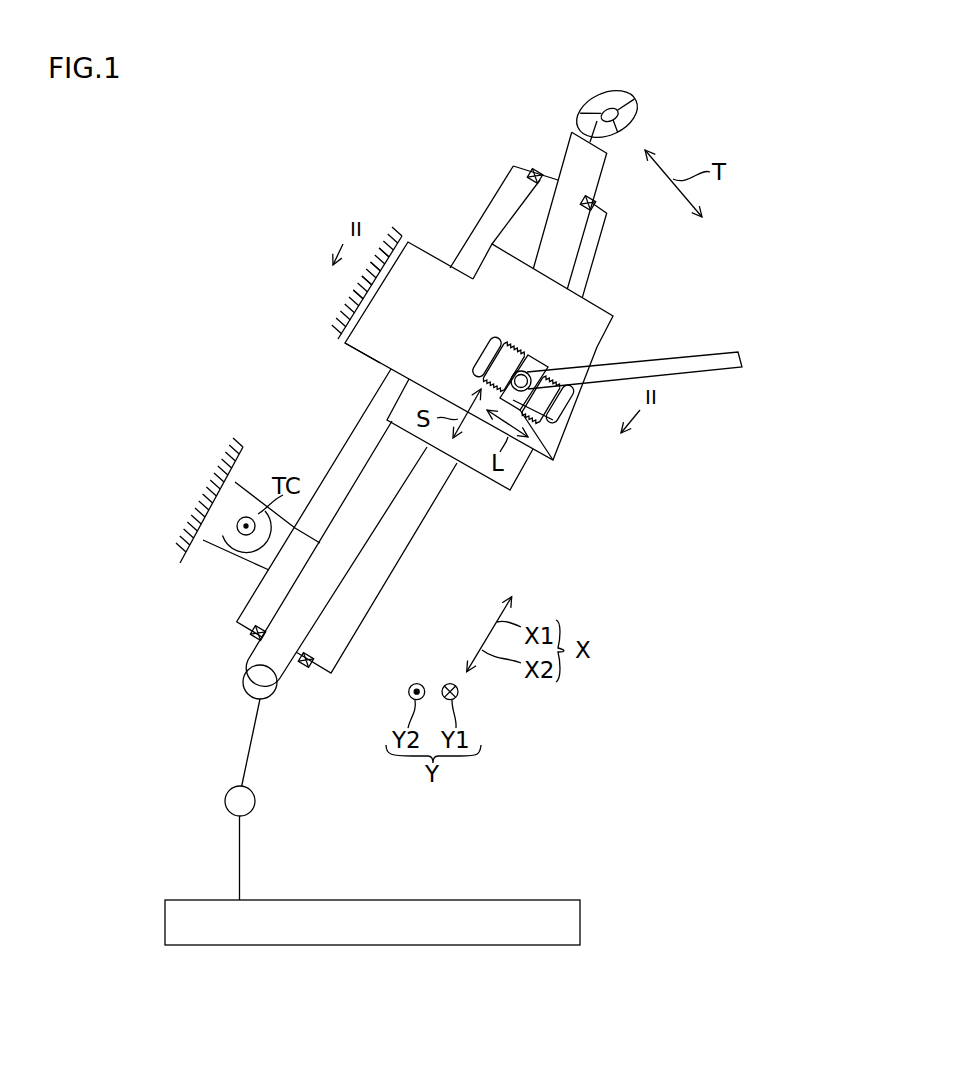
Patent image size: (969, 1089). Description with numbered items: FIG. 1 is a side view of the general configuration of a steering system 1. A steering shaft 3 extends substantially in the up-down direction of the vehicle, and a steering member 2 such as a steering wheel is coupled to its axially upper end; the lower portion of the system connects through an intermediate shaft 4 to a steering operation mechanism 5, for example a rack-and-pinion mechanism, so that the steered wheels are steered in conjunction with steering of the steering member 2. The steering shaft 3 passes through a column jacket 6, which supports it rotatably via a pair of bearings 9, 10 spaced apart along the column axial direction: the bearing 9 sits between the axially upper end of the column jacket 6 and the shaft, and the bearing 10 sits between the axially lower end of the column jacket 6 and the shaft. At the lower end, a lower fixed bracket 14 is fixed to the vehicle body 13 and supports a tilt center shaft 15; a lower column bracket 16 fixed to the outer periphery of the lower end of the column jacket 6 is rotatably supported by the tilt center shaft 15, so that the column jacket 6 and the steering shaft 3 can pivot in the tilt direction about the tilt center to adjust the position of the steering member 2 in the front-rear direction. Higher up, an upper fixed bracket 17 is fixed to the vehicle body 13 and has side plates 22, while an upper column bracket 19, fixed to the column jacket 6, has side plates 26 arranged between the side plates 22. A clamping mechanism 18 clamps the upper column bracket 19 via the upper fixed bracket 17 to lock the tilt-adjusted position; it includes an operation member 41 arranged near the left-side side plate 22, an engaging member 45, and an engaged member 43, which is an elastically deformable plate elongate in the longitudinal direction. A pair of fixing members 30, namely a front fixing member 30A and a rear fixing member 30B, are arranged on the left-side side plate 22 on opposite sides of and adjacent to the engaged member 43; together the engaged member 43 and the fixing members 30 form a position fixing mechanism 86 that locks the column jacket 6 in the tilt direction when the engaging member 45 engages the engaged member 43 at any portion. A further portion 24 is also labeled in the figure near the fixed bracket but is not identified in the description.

The steering system 1 is at (664, 101).
The steering member 2 is at (577, 100).
The steering shaft 3 is at (557, 152).
The intermediate shaft 4 is at (250, 742).
The steering operation mechanism 5 is at (165, 922).
The column jacket 6 is at (497, 182).
The bearing 9 is at (590, 201).
The bearing 10 is at (307, 665).
The vehicle body 13 is at (331, 326).
The lower fixed bracket 14 is at (217, 535).
The tilt center shaft 15 is at (246, 516).
The lower column bracket 16 is at (260, 568).
The upper fixed bracket 17 is at (358, 353).
The clamping mechanism 18 is at (560, 357).
The upper column bracket 19 is at (600, 300).
The side plates 22 is at (428, 266).
The fixing portion 24 is at (356, 294).
The side plates 26 is at (472, 470).
The fixing members 30 is at (540, 388).
The front fixing member 30A is at (490, 345).
The rear fixing member 30B is at (572, 402).
The operation member 41 is at (725, 354).
The engaged member 43 is at (478, 361).
The engaging member 45 is at (534, 422).
The position fixing mechanism 86 is at (470, 355).